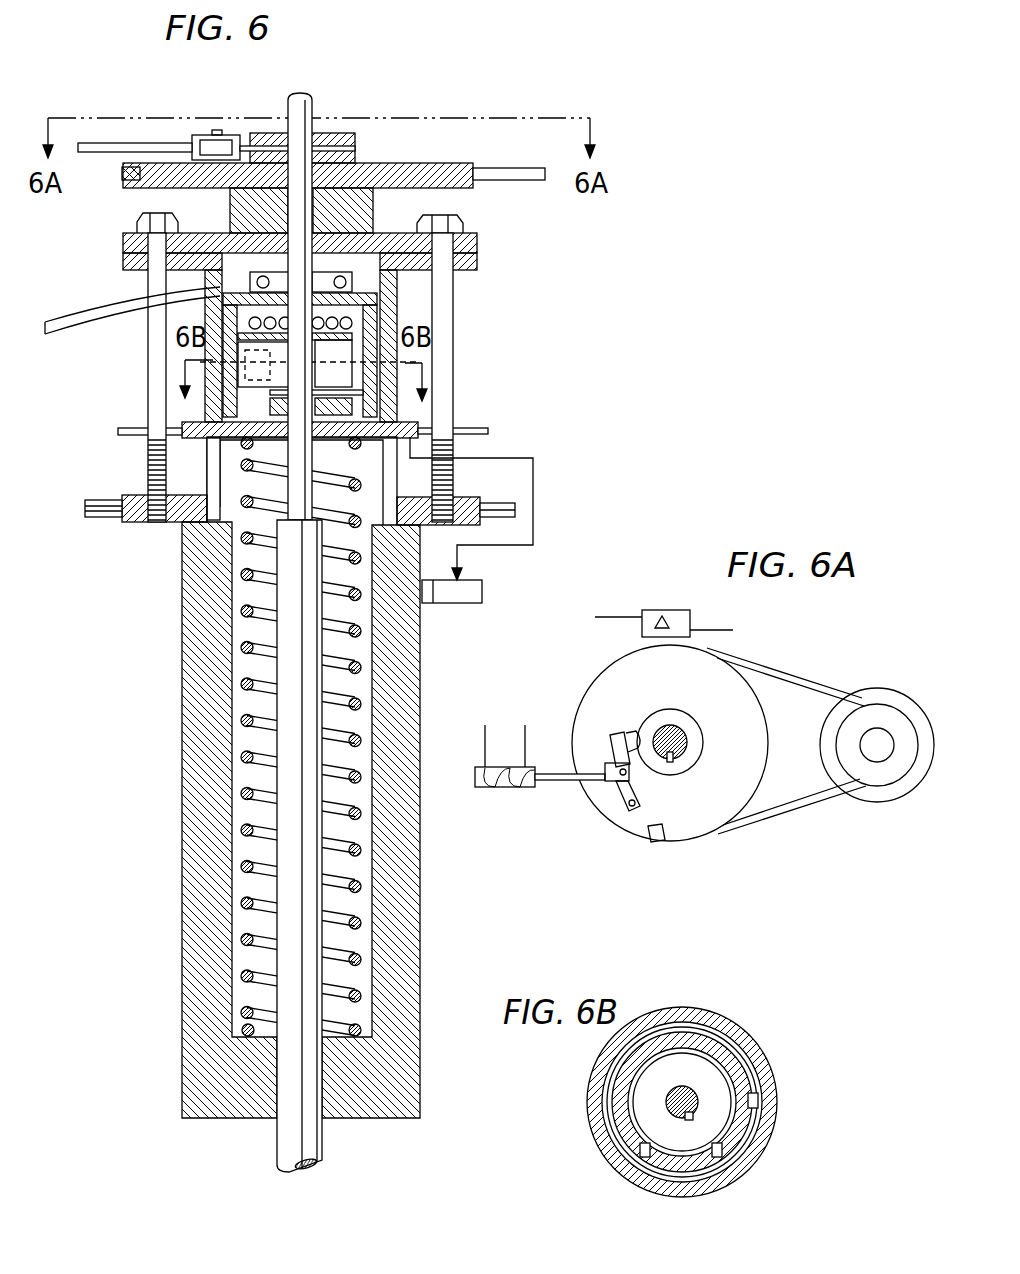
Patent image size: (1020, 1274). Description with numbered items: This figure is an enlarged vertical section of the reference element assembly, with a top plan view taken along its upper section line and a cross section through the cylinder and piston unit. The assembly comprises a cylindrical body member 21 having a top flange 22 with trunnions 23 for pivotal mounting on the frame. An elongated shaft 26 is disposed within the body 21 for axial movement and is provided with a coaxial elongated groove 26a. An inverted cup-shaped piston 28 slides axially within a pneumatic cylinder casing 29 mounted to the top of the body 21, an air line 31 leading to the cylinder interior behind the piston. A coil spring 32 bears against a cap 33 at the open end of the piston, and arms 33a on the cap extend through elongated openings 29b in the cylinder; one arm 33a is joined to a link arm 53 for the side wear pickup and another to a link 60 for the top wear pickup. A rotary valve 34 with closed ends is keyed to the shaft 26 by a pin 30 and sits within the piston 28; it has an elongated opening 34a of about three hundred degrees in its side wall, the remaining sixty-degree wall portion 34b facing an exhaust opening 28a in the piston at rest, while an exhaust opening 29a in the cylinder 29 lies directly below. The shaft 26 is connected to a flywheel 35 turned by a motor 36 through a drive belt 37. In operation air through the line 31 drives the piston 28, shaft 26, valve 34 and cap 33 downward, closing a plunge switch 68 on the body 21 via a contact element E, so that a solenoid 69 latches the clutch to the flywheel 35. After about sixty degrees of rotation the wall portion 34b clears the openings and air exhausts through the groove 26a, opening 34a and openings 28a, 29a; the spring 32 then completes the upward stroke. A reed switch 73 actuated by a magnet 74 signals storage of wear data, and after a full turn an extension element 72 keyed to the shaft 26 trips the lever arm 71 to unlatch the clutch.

In FIG. 6, the cylindrical body member 21 is at (195, 648).
In FIG. 6, the top flange 22 is at (137, 522).
In FIG. 6, the trunnions 23 is at (97, 518).
In FIG. 6, the elongated shaft 26 is at (280, 1148).
In FIG. 6A, the elongated shaft 26 is at (684, 727).
In FIG. 6B, the elongated shaft 26 is at (687, 1090).
In FIG. 6, the coaxial elongated groove 26a is at (300, 266).
In FIG. 6B, the coaxial elongated groove 26a is at (690, 1114).
In FIG. 6, the inverted cup-shaped piston 28 is at (370, 278).
In FIG. 6B, the inverted cup-shaped piston 28 is at (610, 1113).
In FIG. 6, the exhaust opening 28a is at (370, 327).
In FIG. 6, the pneumatic cylinder casing 29 is at (478, 262).
In FIG. 6B, the pneumatic cylinder casing 29 is at (630, 1183).
In FIG. 6, the exhaust opening 29a is at (393, 403).
In FIG. 6B, the exhaust opening 29a is at (780, 1102).
In FIG. 6, the elongated openings 29b is at (390, 483).
In FIG. 6, the pin 30 is at (262, 392).
In FIG. 6, the air line 31 is at (75, 324).
In FIG. 6, the coil spring 32 is at (245, 718).
In FIG. 6, the cap 33 is at (372, 443).
In FIG. 6, the arms 33a is at (410, 423).
In FIG. 6, the rotary valve 34 is at (362, 336).
In FIG. 6, the elongated opening 34a is at (242, 368).
In FIG. 6B, the elongated opening 34a is at (723, 1062).
In FIG. 6B, the wall portion 34b is at (668, 1160).
In FIG. 6A, the flywheel 35 is at (765, 783).
In FIG. 6A, the motor 36 is at (892, 718).
In FIG. 6A, the drive belt 37 is at (808, 681).
In FIG. 6, the link arm 53 is at (485, 440).
In FIG. 6, the link 60 is at (130, 427).
In FIG. 6, the plunge switch 68 is at (482, 592).
In FIG. 6A, the solenoid 69 is at (530, 790).
In FIG. 6A, the lever arm 71 is at (610, 740).
In FIG. 6A, the extension element 72 is at (633, 732).
In FIG. 6A, the reed switch 73 is at (650, 612).
In FIG. 6A, the magnet 74 is at (657, 842).
In FIG. 6, the contact element E is at (534, 536).